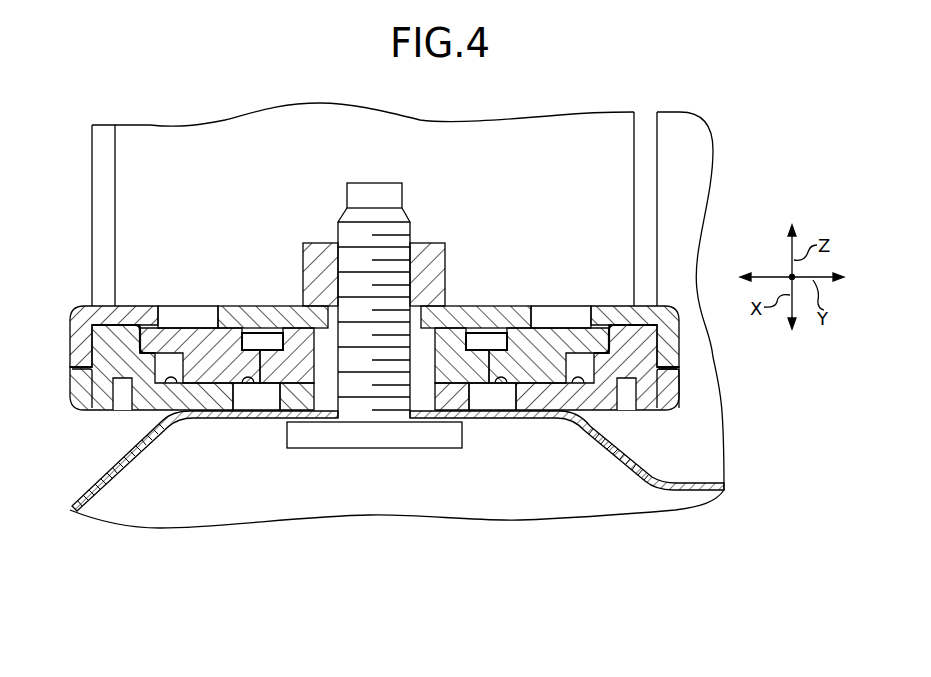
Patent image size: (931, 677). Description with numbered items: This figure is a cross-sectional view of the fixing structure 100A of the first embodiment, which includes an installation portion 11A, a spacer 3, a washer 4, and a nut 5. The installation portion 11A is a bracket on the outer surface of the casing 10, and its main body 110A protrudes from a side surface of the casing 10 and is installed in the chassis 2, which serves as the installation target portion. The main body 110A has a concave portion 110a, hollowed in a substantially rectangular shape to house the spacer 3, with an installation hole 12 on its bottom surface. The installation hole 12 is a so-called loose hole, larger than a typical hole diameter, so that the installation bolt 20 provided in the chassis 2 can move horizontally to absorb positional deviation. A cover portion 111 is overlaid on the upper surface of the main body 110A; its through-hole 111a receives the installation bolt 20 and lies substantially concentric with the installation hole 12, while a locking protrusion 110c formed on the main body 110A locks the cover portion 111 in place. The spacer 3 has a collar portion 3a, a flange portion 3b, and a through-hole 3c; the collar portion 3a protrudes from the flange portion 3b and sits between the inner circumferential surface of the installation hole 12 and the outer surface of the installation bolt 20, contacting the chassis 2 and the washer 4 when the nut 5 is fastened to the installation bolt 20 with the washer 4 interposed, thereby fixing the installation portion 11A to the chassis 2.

The casing 10 is at (92, 194).
The fixing structure 100A is at (722, 202).
The cover portion 111 is at (112, 306).
The through-hole 111a is at (257, 306).
The locking protrusion 110c is at (62, 306).
The main body 110A is at (153, 407).
The concave portion 110a is at (173, 386).
The installation portion 11A is at (686, 385).
The washer 4 is at (238, 306).
The nut 5 is at (322, 245).
The installation bolt 20 is at (402, 190).
The spacer 3 is at (374, 465).
The collar portion 3a is at (297, 390).
The flange portion 3b is at (262, 390).
The through-hole 3c is at (320, 390).
The installation hole 12 is at (253, 422).
The chassis 2 is at (660, 480).